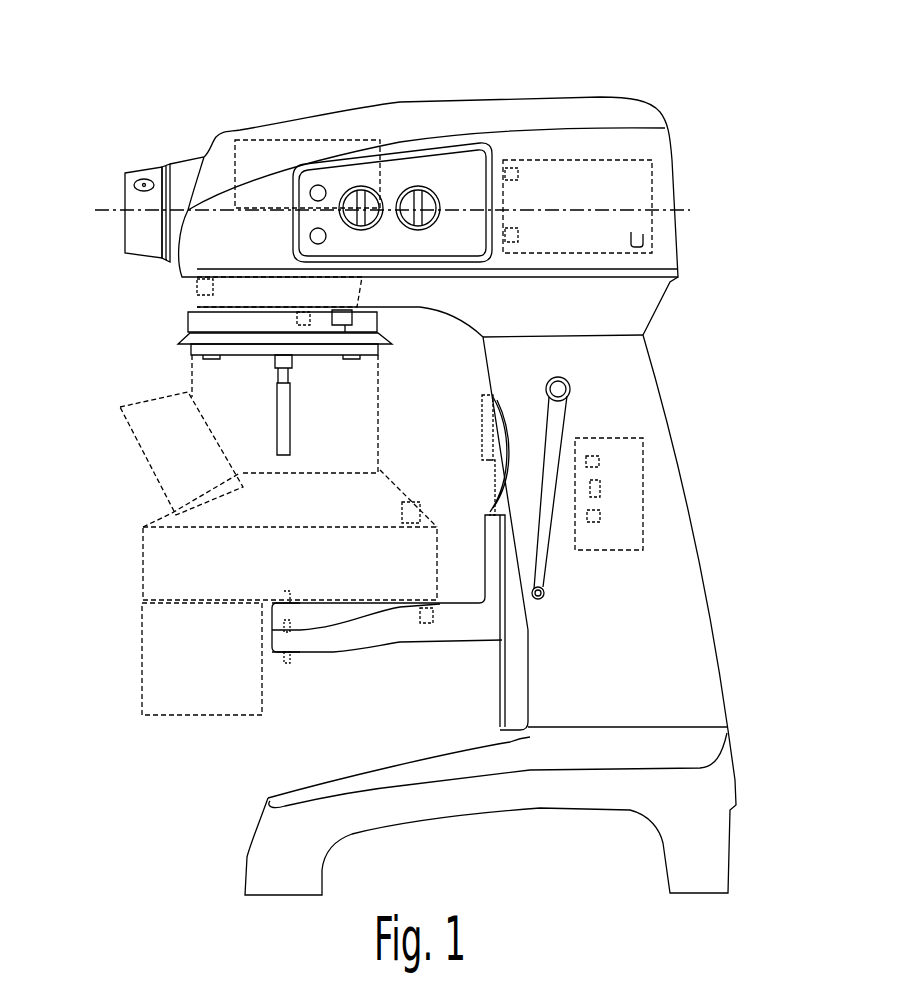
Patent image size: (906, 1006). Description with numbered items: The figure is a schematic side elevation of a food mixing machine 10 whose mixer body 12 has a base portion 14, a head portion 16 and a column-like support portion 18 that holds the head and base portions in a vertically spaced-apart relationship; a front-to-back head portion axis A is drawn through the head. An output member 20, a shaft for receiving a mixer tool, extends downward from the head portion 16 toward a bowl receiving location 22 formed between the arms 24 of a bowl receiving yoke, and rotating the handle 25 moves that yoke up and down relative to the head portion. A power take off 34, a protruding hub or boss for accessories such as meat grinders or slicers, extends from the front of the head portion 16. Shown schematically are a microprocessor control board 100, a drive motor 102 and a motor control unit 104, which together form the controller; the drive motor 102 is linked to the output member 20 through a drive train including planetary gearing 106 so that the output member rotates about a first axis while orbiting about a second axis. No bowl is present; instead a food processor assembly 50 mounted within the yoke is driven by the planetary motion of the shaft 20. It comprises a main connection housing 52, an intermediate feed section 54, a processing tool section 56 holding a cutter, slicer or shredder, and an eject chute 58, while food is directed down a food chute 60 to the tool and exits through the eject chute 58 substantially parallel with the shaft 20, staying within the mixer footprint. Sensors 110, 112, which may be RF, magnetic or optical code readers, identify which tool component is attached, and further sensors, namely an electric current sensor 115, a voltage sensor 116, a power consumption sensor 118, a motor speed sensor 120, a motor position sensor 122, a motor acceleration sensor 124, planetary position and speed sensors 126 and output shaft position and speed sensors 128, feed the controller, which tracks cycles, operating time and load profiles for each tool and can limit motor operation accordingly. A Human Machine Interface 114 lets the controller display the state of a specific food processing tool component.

The food mixing machine 10 is at (181, 70).
The mixer body 12 is at (687, 388).
The base portion 14 is at (713, 791).
The head portion 16 is at (655, 150).
The support portion 18 is at (698, 643).
The output member 20 is at (288, 404).
The bowl receiving location 22 is at (417, 468).
The arms 24 is at (332, 640).
The handle 25 is at (548, 593).
The power take off 34 is at (125, 176).
The food processor assembly 50 is at (105, 387).
The main connection housing 52 is at (190, 372).
The intermediate feed section 54 is at (155, 523).
The processing tool section 56 is at (143, 560).
The eject chute 58 is at (140, 660).
The food chute 60 is at (135, 436).
The microprocessor control board 100 is at (272, 140).
The drive motor 102 is at (594, 160).
The motor control unit 104 is at (644, 541).
The planetary gearing 106 is at (357, 287).
The sensor 110 is at (418, 518).
The sensor 112 is at (426, 624).
The Human Machine Interface 114 is at (448, 168).
The electric current sensor 115 is at (598, 462).
The voltage sensor 116 is at (600, 489).
The power consumption sensor 118 is at (600, 516).
The motor speed sensor 120 is at (514, 170).
The motor position sensor 122 is at (643, 238).
The motor acceleration sensor 124 is at (516, 235).
The planetary position and speed sensors 126 is at (200, 292).
The output shaft position and speed sensors 128 is at (297, 324).
The head portion axis A is at (690, 212).